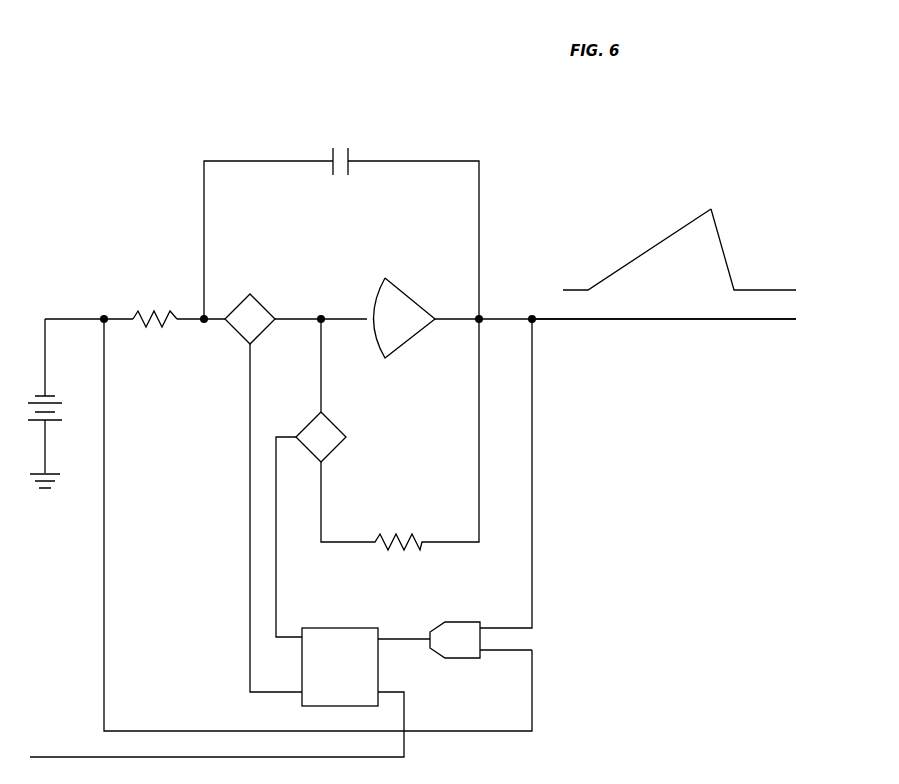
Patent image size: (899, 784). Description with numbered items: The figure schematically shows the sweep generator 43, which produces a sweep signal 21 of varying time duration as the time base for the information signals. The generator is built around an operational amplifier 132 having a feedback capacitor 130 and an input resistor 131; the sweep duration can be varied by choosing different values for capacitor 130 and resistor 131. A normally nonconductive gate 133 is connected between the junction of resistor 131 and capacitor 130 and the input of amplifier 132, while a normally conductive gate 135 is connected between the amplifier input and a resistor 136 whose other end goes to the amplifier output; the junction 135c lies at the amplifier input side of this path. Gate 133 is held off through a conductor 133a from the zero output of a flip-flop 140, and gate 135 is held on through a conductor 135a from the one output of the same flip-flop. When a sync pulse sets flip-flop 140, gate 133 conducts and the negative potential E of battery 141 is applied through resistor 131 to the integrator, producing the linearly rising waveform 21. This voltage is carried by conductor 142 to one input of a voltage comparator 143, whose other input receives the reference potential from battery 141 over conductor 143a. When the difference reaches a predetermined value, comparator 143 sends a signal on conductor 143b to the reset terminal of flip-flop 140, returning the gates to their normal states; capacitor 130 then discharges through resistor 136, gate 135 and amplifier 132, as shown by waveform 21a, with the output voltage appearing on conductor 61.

The sweep generator 43 is at (560, 173).
The feedback capacitor 130 is at (348, 158).
The input resistor 131 is at (144, 320).
The operational amplifier 132 is at (392, 284).
The normally nonconductive gate 133 is at (252, 296).
The conductor 133a is at (250, 410).
The normally conductive gate 135 is at (333, 421).
The conductor 135a is at (276, 568).
The junction 135c is at (323, 316).
The resistor 136 is at (396, 540).
The flip-flop 140 is at (328, 628).
The battery 141 is at (62, 412).
The conductor 142 is at (532, 568).
The voltage comparator 143 is at (458, 622).
The conductor 143a is at (104, 560).
The conductor 143b is at (405, 636).
The sweep signal 21 is at (651, 250).
The waveform 21a is at (722, 243).
The conductor 61 is at (735, 319).